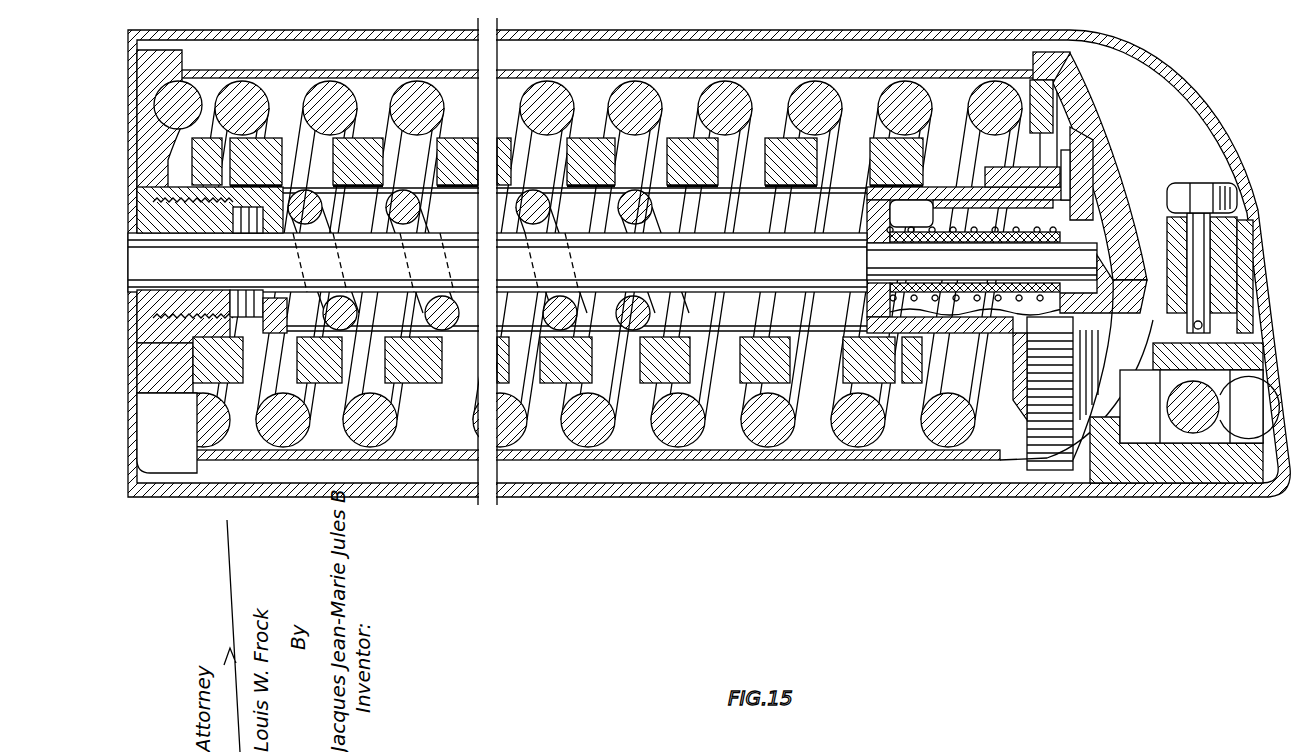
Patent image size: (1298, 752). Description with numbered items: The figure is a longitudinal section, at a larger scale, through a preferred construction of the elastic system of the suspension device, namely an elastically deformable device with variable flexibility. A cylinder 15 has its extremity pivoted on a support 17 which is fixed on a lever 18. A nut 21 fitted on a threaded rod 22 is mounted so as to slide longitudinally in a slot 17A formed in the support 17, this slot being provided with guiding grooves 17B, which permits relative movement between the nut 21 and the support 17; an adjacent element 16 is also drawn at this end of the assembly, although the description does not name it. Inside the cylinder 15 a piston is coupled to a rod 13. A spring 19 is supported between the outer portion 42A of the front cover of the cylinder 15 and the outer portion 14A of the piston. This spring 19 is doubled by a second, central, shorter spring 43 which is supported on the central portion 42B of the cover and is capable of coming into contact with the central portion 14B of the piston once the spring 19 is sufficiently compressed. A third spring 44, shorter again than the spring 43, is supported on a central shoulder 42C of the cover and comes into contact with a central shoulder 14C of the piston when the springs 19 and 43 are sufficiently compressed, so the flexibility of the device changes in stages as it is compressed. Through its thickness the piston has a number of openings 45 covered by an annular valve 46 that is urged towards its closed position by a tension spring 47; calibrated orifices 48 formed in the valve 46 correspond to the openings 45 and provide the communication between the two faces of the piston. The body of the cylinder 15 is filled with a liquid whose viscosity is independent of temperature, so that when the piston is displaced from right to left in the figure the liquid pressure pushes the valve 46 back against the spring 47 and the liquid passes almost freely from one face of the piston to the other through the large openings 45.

The rod 13 is at (696, 273).
The outer portion of the piston 14A is at (1040, 137).
The central portion of the piston 14B is at (1008, 177).
The central shoulder of the piston 14C is at (868, 210).
The cylinder 15 is at (1010, 62).
The nut 16 is at (1200, 183).
The support 17 is at (1245, 255).
The slot 17A is at (1245, 408).
The guiding grooves 17B is at (1245, 365).
The lever 18 is at (1203, 92).
The spring 19 is at (912, 82).
The nut 21 is at (1218, 420).
The threaded rod 22 is at (1178, 427).
The outer portion of the front cover 42A is at (152, 100).
The central portion of the cover 42B is at (194, 153).
The central shoulder of the cover 42C is at (272, 205).
The second central shorter spring 43 is at (774, 145).
The third spring 44 is at (392, 148).
The openings 45 is at (1057, 132).
The annular valve 46 is at (1088, 182).
The tension spring 47 is at (1035, 304).
The calibrated orifices 48 is at (1067, 178).